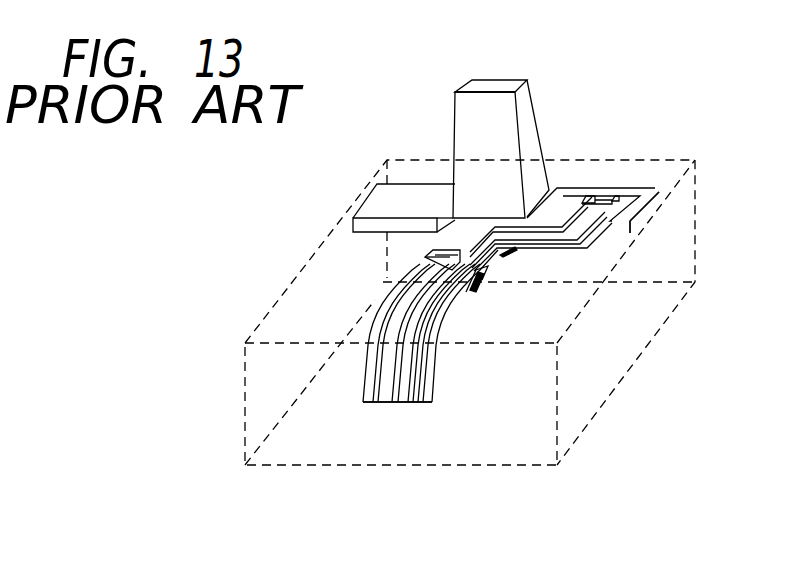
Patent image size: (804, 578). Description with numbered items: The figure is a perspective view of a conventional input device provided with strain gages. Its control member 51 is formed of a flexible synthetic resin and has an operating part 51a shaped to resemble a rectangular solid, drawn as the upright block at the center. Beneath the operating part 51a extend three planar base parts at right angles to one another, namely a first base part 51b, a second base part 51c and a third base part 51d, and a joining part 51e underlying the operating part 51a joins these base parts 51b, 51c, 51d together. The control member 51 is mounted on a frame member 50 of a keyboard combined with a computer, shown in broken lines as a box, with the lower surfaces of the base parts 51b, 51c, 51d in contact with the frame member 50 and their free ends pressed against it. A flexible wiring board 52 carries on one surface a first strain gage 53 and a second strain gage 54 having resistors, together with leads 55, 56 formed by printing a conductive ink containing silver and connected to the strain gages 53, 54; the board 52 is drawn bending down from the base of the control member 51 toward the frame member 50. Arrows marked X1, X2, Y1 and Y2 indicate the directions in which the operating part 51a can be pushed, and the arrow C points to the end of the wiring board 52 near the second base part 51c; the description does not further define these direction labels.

The frame member 50 is at (325, 468).
The control member 51 is at (452, 121).
The operating part 51a is at (458, 106).
The first base part 51b is at (494, 272).
The second base part 51c is at (642, 214).
The third base part 51d is at (352, 228).
The joining part 51e is at (433, 230).
The flexible wiring board 52 is at (629, 193).
The first strain gage 53 is at (400, 275).
The second strain gage 54 is at (600, 196).
The leads 55 is at (392, 393).
The leads 56 is at (569, 208).
The direction C is at (648, 205).
The direction X1 is at (505, 80).
The direction X2 is at (451, 146).
The direction Y1 is at (450, 83).
The direction Y2 is at (568, 85).